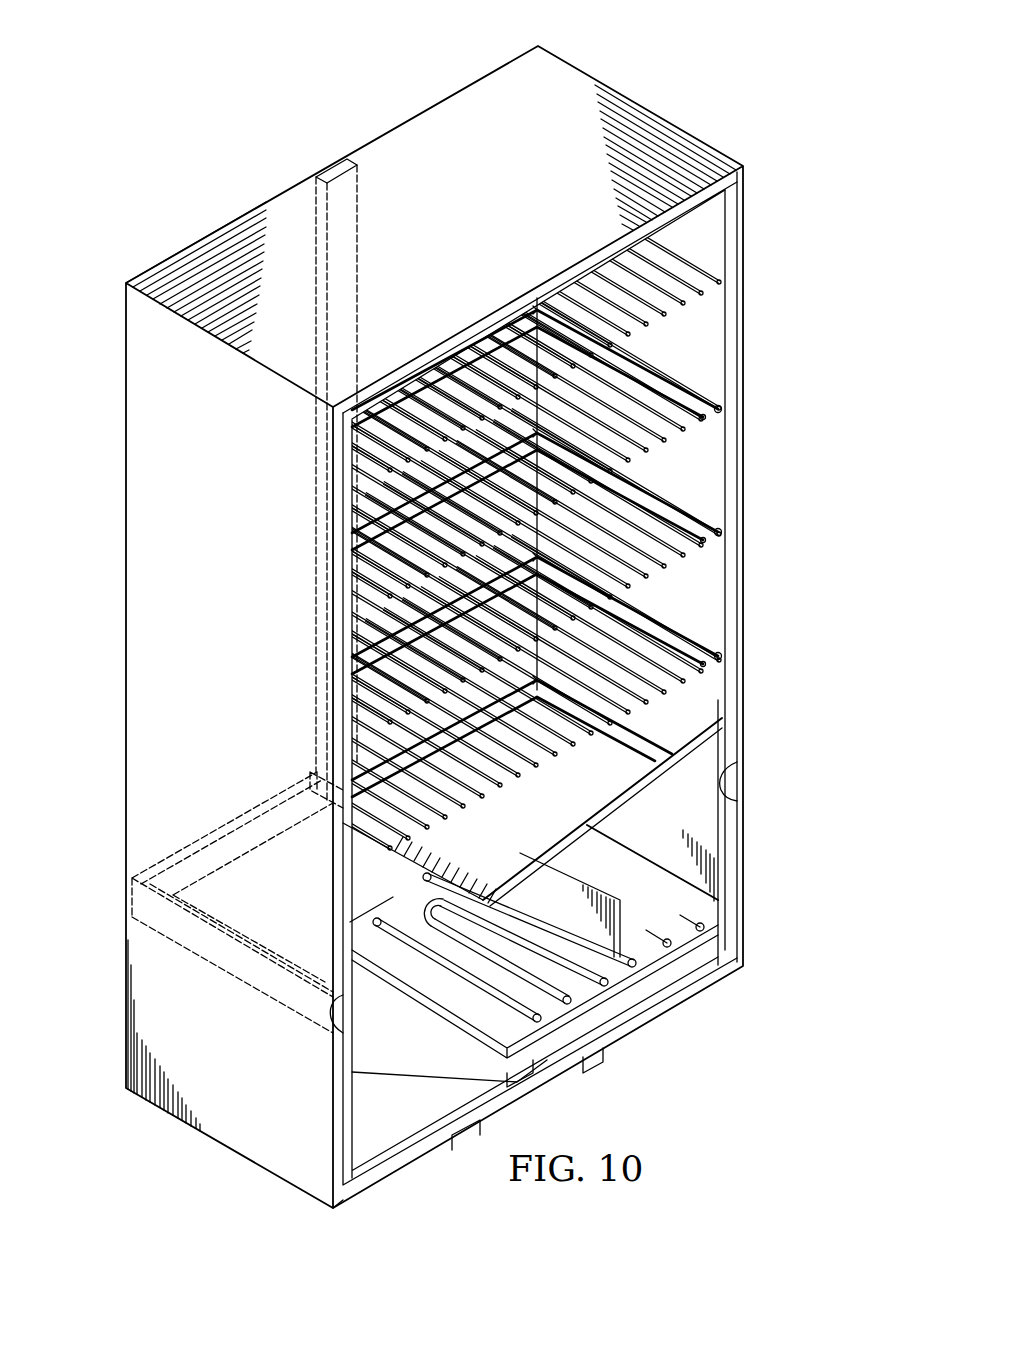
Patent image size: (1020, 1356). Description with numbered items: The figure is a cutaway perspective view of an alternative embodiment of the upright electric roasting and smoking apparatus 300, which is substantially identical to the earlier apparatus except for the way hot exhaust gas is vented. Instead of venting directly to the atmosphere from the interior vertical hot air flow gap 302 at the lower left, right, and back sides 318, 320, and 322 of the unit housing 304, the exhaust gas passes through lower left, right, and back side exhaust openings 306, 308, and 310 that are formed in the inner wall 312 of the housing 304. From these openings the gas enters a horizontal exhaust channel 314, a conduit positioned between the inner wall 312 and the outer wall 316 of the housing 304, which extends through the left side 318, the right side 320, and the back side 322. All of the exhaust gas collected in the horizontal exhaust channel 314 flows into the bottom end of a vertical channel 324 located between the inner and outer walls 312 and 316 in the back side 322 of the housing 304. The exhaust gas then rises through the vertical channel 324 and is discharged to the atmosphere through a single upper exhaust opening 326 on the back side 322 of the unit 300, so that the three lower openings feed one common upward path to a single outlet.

The upright electric roasting and smoking apparatus 300 is at (660, 66).
The interior vertical hot air flow gap 302 is at (745, 580).
The unit housing 304 is at (745, 318).
The lower left side exhaust opening 306 is at (343, 1012).
The lower right side exhaust opening 308 is at (742, 770).
The lower back side exhaust opening 310 is at (312, 790).
The inner wall 312 is at (345, 1093).
The horizontal exhaust channel 314 is at (197, 835).
The outer wall 316 is at (342, 1210).
The left side 318 is at (126, 512).
The right side 320 is at (747, 200).
The back side 322 is at (547, 340).
The vertical channel 324 is at (313, 220).
The upper exhaust opening 326 is at (345, 200).